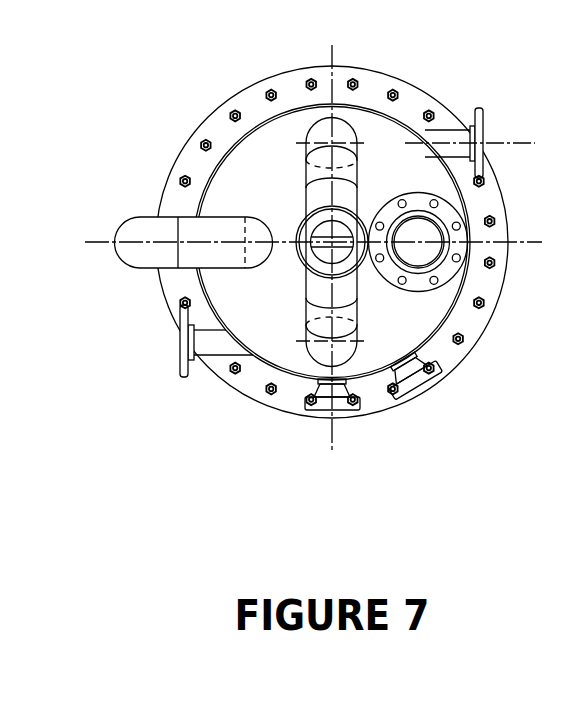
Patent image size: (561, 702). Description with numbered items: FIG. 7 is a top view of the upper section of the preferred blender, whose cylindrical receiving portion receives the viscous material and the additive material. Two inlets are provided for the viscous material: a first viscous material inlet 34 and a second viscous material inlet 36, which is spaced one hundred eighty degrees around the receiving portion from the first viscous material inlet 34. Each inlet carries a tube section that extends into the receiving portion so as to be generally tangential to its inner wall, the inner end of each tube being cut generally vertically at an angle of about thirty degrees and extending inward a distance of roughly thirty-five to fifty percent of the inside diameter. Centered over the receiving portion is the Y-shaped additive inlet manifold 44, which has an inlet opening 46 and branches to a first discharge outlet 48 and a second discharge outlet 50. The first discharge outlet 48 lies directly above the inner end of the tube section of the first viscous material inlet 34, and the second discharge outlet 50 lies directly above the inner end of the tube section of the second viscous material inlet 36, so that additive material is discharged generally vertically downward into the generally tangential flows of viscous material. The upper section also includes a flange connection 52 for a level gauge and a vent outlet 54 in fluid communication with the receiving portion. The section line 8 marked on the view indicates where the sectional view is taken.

The section line 8- 8 is at (85, 242).
The first viscous material inlet 34 is at (488, 128).
The second viscous material inlet 36 is at (174, 341).
The Y-shaped additive inlet manifold 44 is at (299, 291).
The inlet opening 46 is at (368, 212).
The first discharge outlet 48 is at (314, 162).
The second discharge outlet 50 is at (343, 319).
The flange connection 52 is at (417, 184).
The vent outlet 54 is at (146, 272).